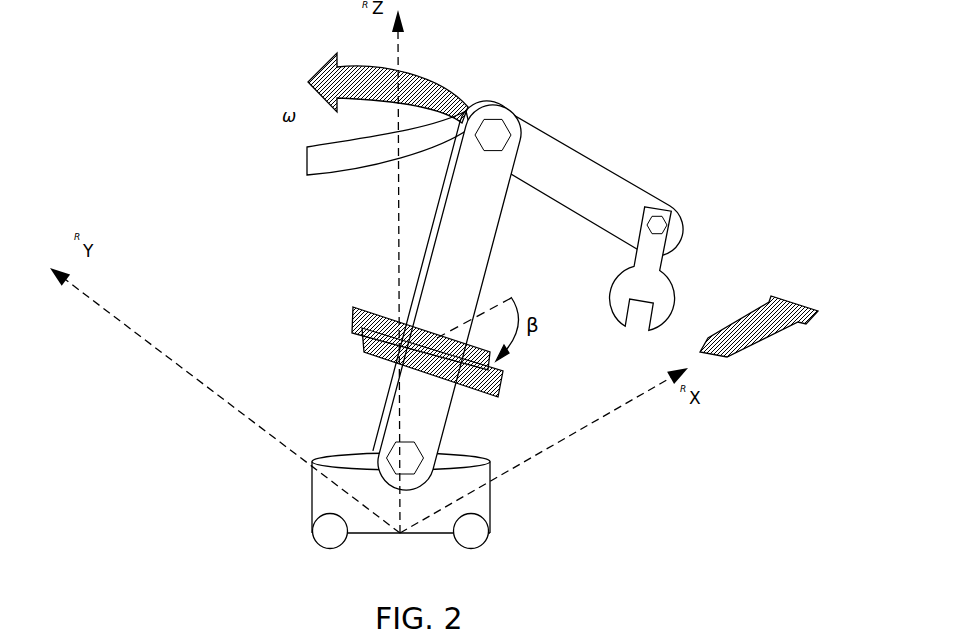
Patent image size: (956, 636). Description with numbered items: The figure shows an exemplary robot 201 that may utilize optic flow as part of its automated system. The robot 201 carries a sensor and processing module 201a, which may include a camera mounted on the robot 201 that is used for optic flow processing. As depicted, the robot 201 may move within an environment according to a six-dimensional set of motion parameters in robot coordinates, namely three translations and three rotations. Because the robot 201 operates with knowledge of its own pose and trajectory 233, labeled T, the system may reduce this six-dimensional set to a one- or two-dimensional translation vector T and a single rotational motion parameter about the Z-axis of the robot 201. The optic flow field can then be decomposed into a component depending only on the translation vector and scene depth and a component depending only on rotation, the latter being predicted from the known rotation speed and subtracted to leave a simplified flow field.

The robot 201 is at (143, 86).
The sensor and processing module 201a is at (384, 311).
The trajectory 233 is at (758, 326).